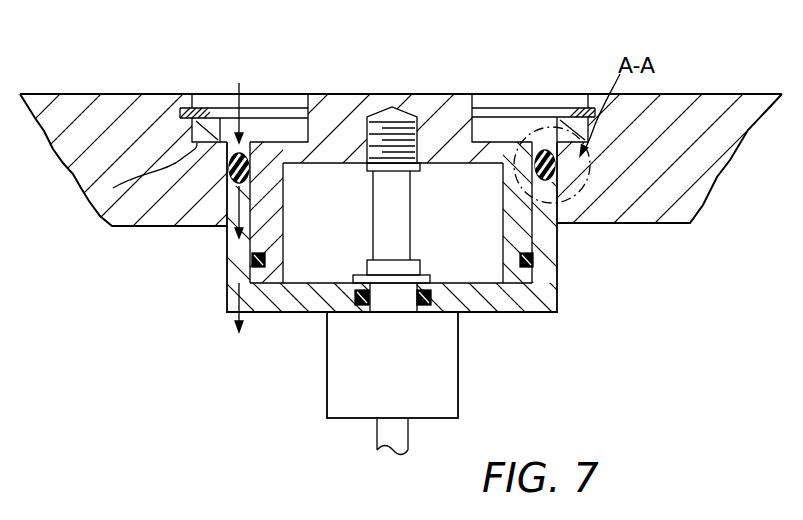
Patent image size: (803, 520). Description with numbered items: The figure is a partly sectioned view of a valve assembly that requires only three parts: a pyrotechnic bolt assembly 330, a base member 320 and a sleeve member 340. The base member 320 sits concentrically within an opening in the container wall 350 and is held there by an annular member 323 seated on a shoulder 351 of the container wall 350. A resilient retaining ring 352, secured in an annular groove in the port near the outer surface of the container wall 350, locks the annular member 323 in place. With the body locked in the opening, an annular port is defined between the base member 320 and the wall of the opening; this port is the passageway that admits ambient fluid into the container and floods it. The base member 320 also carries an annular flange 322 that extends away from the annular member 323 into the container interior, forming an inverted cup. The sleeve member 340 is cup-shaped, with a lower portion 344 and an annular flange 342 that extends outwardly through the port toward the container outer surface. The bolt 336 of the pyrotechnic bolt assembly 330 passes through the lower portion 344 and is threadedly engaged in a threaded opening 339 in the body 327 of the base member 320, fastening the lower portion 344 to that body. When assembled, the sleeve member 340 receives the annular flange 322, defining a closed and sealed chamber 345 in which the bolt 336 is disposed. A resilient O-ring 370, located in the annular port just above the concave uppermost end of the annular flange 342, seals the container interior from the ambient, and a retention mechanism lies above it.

The base member 320 is at (362, 86).
The annular flange 322 is at (527, 235).
The annular member 323 is at (192, 131).
The body 327 is at (438, 93).
The pyrotechnic bolt assembly 330 is at (298, 434).
The bolt 336 is at (403, 228).
The threaded opening 339 is at (418, 137).
The sleeve member 340 is at (292, 327).
The annular flange 342 is at (230, 238).
The lower portion 344 is at (515, 295).
The closed and sealed chamber 345 is at (346, 248).
The container wall 350 is at (110, 112).
The shoulder 351 is at (100, 215).
The resilient retaining ring 352 is at (199, 112).
The resilient O-ring 370 is at (197, 143).